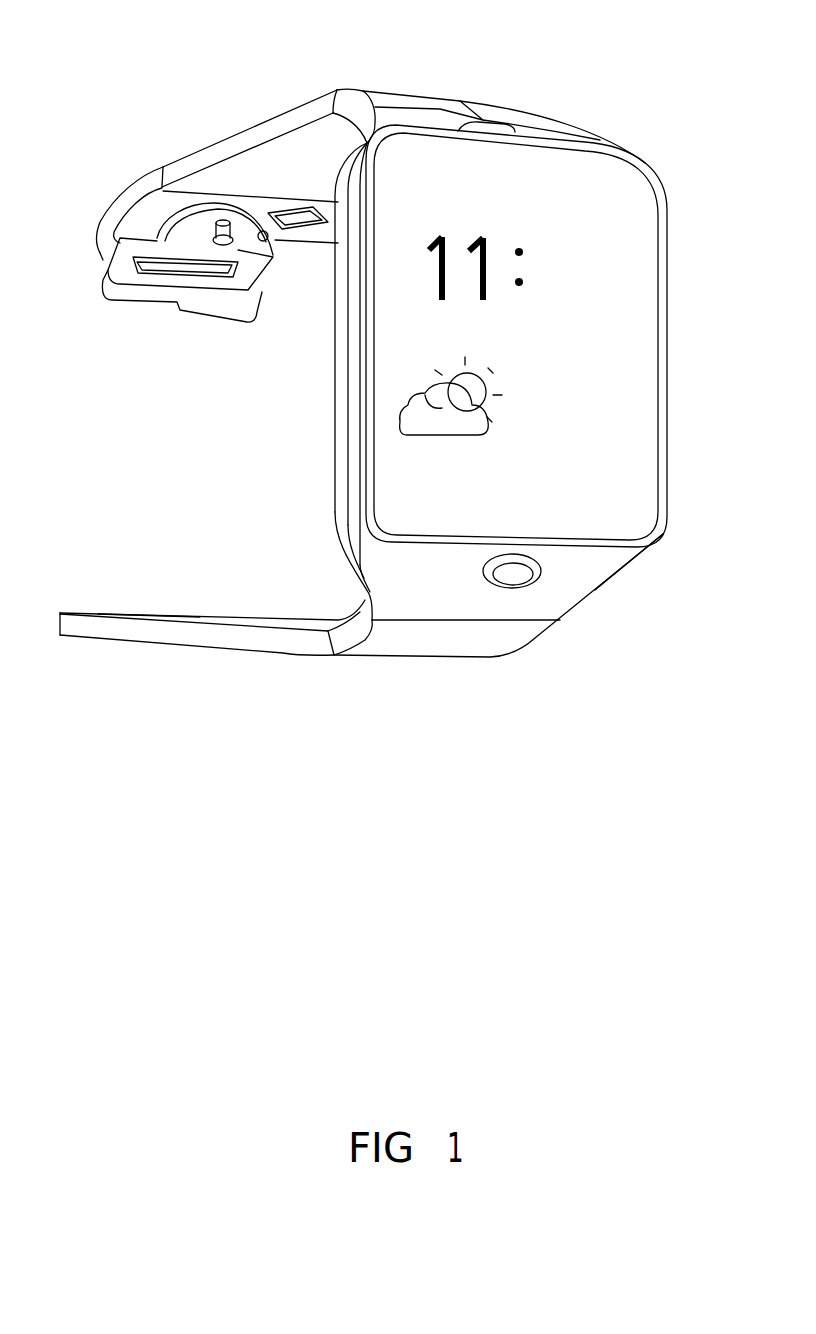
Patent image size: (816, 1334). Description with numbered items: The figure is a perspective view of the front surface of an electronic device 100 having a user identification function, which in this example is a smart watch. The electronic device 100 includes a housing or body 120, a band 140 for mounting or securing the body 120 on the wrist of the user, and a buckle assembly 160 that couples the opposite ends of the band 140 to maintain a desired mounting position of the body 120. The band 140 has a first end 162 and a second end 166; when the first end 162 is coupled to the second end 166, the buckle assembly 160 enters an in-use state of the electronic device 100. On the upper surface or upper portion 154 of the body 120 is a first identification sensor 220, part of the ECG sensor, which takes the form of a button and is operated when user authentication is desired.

The electronic device 100 is at (463, 63).
The body 120 is at (668, 195).
The band 140 is at (267, 120).
The upper portion 154 is at (595, 590).
The buckle assembly 160 is at (157, 321).
The first end 162 is at (98, 613).
The second end 166 is at (103, 260).
The first identification sensor 220 is at (514, 580).